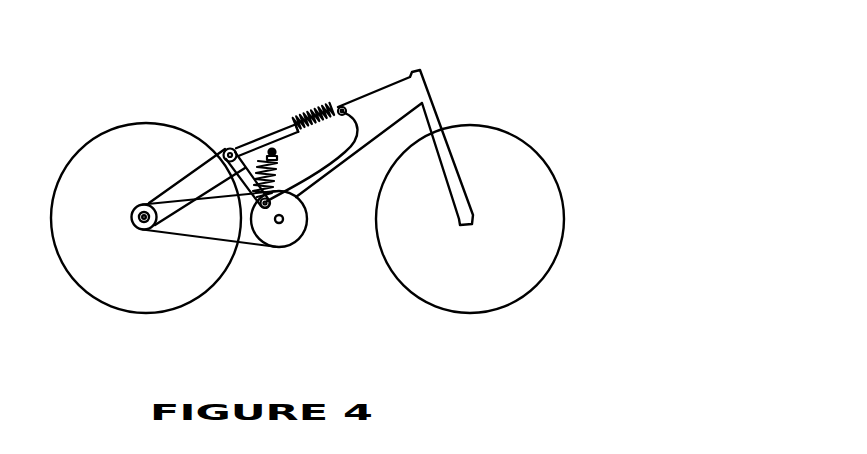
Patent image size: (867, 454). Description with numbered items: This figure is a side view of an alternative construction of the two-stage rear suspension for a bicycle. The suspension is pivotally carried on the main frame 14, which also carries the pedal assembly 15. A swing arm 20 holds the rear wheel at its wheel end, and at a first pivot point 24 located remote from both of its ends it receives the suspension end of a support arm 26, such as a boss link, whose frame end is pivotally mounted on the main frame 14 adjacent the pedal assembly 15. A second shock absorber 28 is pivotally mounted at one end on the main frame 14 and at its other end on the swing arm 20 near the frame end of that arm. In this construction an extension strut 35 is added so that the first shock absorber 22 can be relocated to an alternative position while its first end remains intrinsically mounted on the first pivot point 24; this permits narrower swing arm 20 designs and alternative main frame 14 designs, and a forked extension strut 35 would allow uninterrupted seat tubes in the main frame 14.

The main frame 14 is at (378, 97).
The pedal assembly 15 is at (297, 250).
The swing arm 20 is at (198, 180).
The first shock absorber 22 is at (309, 112).
The first pivot point 24 is at (228, 151).
The support arm 26 is at (253, 170).
The second shock absorber 28 is at (271, 184).
The extension strut 35 is at (277, 132).